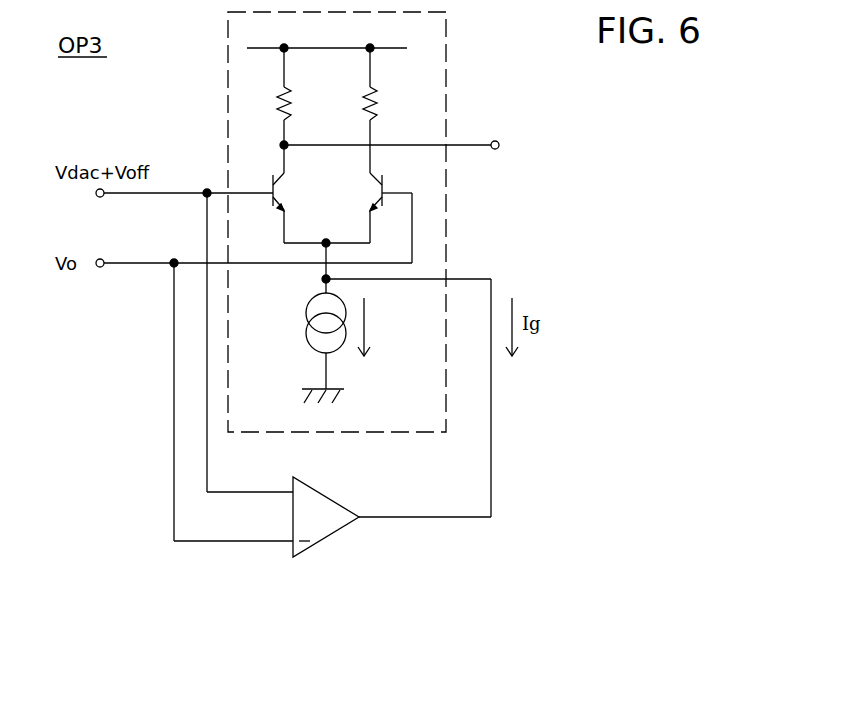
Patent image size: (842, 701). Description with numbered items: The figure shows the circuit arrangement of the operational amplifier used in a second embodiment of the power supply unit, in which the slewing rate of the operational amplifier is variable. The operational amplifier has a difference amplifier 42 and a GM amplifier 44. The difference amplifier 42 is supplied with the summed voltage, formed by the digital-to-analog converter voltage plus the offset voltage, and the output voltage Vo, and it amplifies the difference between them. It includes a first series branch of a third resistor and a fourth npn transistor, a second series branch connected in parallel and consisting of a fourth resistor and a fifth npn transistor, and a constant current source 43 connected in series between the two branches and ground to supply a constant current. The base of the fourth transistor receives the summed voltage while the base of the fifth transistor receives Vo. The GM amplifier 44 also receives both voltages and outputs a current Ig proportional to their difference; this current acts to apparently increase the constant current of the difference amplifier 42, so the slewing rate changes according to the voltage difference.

The difference amplifier 42 is at (365, 222).
The constant current source 43 is at (302, 302).
The GM amplifier 44 is at (318, 481).